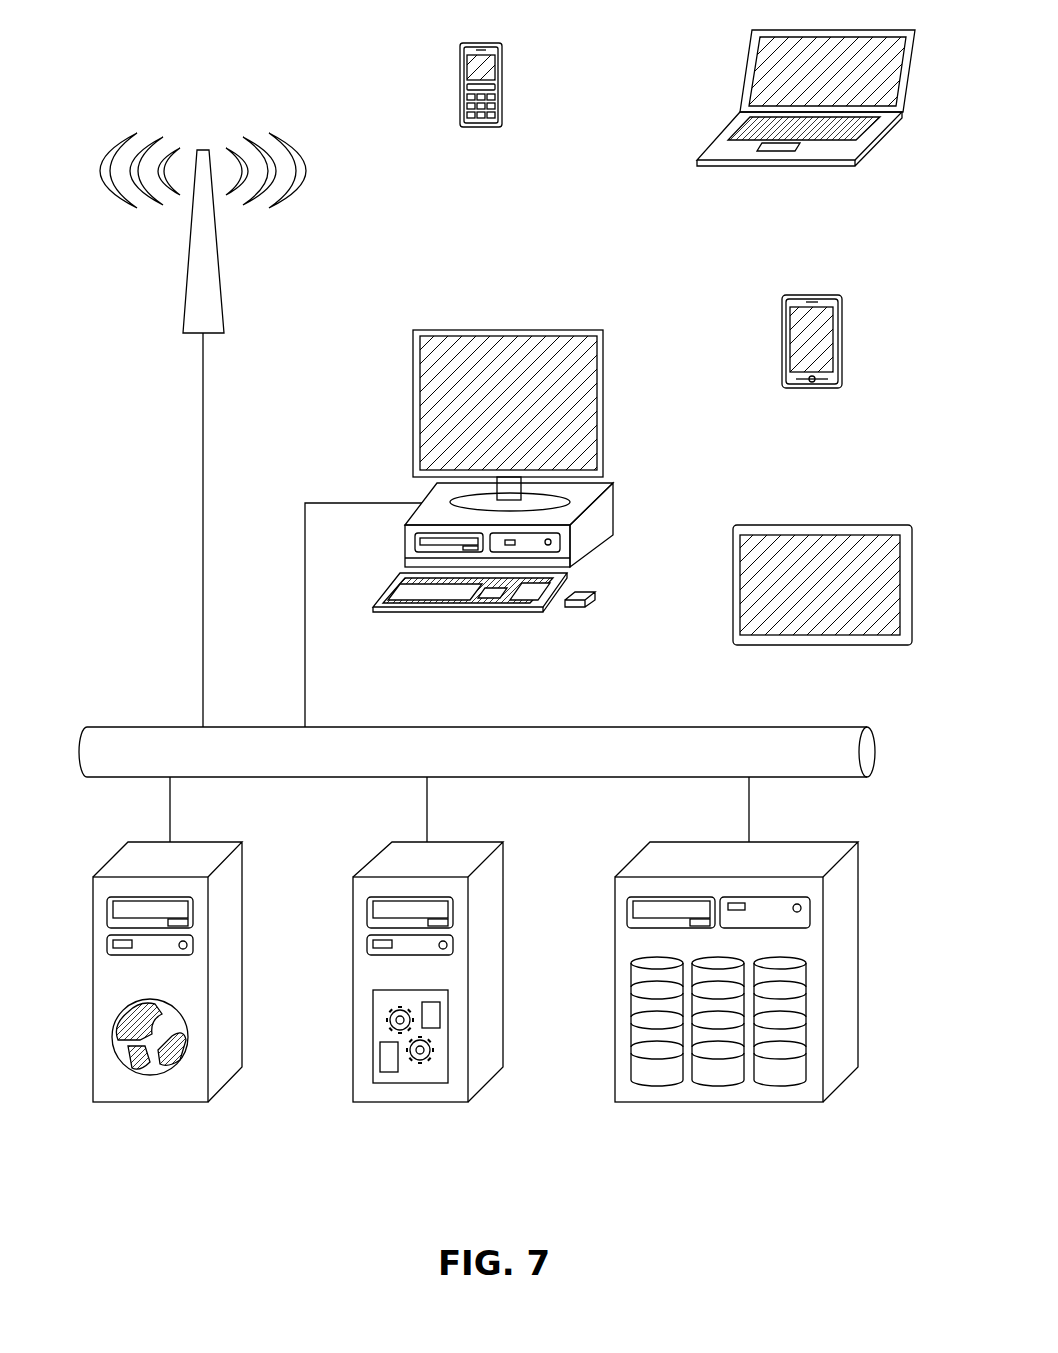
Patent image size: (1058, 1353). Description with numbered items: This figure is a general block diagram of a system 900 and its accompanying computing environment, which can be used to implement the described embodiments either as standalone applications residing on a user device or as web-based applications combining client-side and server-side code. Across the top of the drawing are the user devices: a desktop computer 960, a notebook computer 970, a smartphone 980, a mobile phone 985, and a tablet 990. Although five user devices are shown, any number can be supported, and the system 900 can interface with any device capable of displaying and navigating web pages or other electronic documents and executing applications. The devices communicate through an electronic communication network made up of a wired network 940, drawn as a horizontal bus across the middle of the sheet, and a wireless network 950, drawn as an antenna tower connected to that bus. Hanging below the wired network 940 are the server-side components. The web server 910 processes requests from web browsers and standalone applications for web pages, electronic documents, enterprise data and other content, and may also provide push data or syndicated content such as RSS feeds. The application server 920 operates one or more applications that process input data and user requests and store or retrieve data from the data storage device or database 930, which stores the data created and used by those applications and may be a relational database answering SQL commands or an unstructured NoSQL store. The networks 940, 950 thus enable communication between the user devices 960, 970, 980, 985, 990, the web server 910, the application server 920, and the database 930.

The system 900 is at (158, 60).
The web server 910 is at (157, 1092).
The application server 920 is at (412, 1090).
The data storage device or database 930 is at (712, 1085).
The wired network 940 is at (477, 752).
The wireless network 950 is at (225, 240).
The desktop computer 960 is at (490, 617).
The notebook computer 970 is at (797, 175).
The smartphone 980 is at (815, 400).
The mobile phone 985 is at (486, 143).
The tablet 990 is at (817, 642).